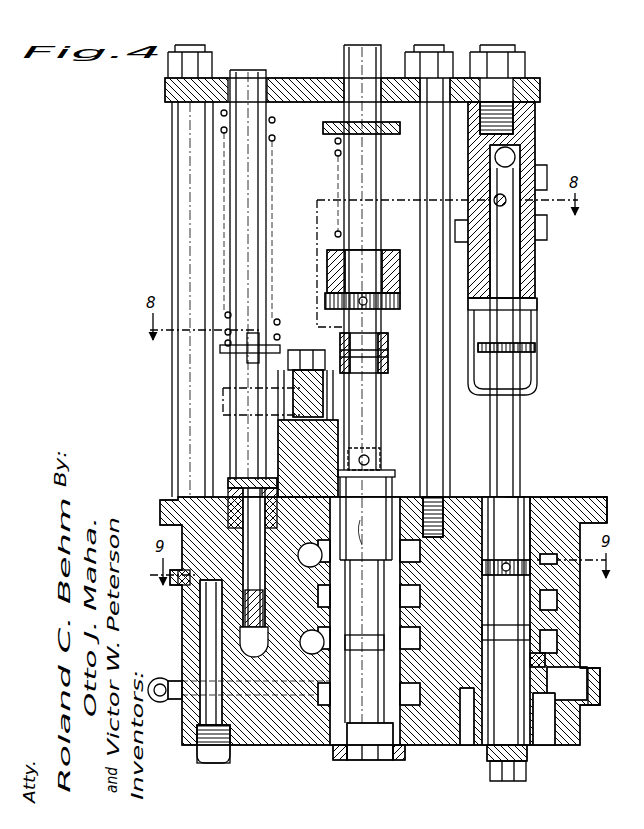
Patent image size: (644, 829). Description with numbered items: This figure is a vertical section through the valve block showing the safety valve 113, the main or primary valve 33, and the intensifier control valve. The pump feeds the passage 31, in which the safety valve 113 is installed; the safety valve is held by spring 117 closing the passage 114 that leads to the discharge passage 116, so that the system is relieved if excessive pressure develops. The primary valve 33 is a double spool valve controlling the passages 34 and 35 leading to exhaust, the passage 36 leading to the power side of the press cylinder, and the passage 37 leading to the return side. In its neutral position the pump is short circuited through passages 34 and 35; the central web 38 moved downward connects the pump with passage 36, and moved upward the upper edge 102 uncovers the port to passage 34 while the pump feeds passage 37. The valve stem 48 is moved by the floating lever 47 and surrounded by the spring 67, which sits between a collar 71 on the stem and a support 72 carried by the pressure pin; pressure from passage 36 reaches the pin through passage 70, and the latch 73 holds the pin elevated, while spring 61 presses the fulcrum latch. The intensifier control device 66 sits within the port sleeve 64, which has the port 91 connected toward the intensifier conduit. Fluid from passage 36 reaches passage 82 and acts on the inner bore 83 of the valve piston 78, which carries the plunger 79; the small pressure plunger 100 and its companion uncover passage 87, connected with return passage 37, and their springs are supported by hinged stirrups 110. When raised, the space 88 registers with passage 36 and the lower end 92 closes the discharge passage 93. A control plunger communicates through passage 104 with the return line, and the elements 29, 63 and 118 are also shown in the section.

The fitting 29 is at (600, 690).
The passage 31 is at (312, 642).
The main or primary valve 33 is at (363, 45).
The passage 34 is at (310, 555).
The passage 35 is at (336, 752).
The passage 36 is at (462, 512).
The passage 37 is at (370, 756).
The central web 38 is at (364, 642).
The floating lever 47 is at (388, 345).
The primary valve stem 48 is at (352, 306).
The spring 61 is at (508, 156).
The chamber 63 is at (557, 604).
The port sleeve 64 is at (542, 522).
The intensifier control device 66 is at (522, 493).
The spring 67 is at (335, 153).
The passage 70 is at (369, 611).
The collar 71 is at (335, 135).
The support 72 is at (327, 273).
The latch 73 is at (223, 402).
The valve piston 78 is at (516, 508).
The plunger 79 is at (520, 322).
The passage 82 is at (506, 621).
The inner bore or hollowed portion 83 is at (550, 563).
The passage 87 is at (165, 680).
The space 88 is at (546, 662).
The port 91 is at (557, 638).
The lower end 92 is at (532, 762).
The discharge passage 93 is at (467, 745).
The pressure plunger 100 is at (506, 201).
The upper edge 102 is at (361, 530).
The passage 104 is at (326, 700).
The hinged stirrups 110 is at (536, 345).
The safety valve 113 is at (237, 74).
The passage 114 is at (250, 641).
The discharge passage 116 is at (212, 612).
The spring 117 is at (275, 120).
The link 118 is at (372, 446).